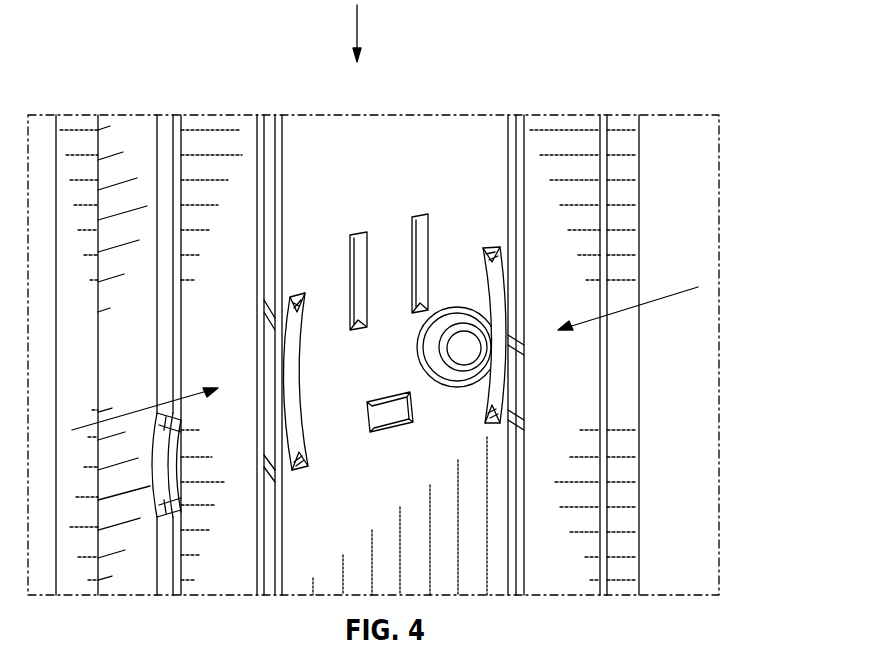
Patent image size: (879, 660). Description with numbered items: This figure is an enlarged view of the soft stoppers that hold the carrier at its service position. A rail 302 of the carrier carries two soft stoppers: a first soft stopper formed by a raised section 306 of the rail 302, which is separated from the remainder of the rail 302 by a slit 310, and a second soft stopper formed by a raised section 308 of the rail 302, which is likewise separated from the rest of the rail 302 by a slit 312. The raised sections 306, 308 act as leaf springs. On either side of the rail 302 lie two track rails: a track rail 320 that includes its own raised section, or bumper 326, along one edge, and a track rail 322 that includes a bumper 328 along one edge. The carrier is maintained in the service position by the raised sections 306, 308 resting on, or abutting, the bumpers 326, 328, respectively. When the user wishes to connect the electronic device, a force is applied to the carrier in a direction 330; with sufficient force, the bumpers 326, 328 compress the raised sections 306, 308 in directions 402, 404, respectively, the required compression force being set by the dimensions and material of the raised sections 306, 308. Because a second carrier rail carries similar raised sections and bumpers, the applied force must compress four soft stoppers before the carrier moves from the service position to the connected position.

The rail 302 is at (390, 150).
The raised section 306 is at (278, 368).
The raised section 308 is at (512, 340).
The slit 310 is at (297, 292).
The slit 312 is at (488, 247).
The track rail 320 is at (254, 564).
The track rail 322 is at (581, 574).
The bumper 326 is at (265, 465).
The bumper 328 is at (523, 408).
The direction 330 is at (357, 33).
The direction 402 is at (145, 407).
The direction 404 is at (697, 287).